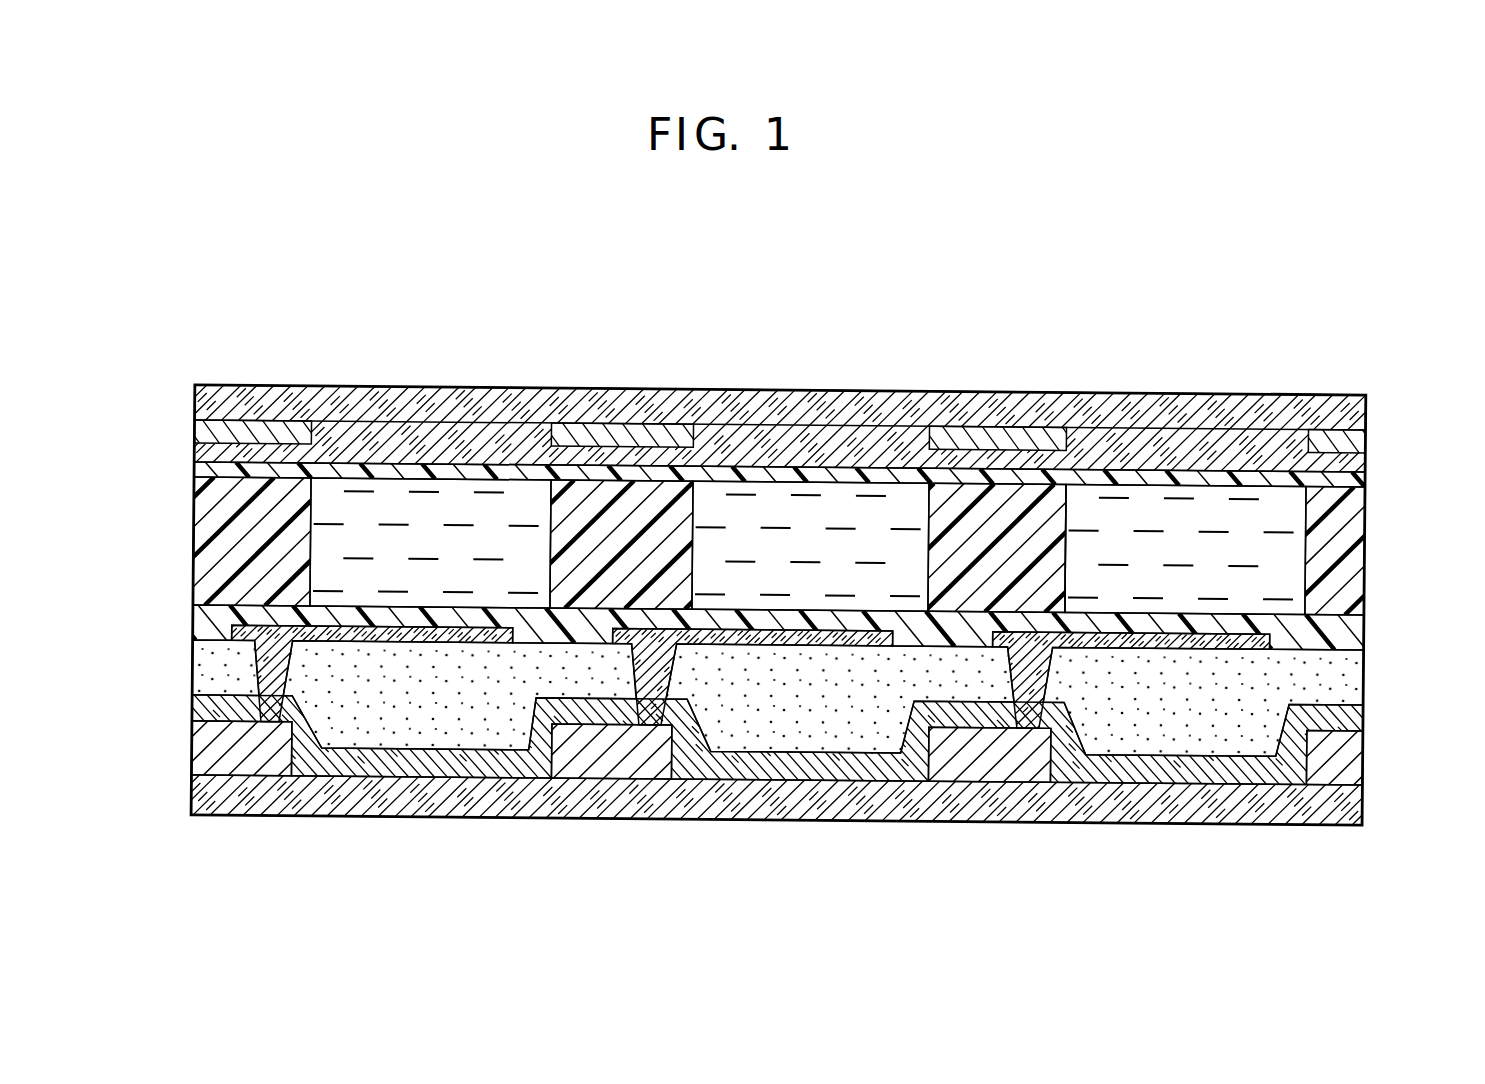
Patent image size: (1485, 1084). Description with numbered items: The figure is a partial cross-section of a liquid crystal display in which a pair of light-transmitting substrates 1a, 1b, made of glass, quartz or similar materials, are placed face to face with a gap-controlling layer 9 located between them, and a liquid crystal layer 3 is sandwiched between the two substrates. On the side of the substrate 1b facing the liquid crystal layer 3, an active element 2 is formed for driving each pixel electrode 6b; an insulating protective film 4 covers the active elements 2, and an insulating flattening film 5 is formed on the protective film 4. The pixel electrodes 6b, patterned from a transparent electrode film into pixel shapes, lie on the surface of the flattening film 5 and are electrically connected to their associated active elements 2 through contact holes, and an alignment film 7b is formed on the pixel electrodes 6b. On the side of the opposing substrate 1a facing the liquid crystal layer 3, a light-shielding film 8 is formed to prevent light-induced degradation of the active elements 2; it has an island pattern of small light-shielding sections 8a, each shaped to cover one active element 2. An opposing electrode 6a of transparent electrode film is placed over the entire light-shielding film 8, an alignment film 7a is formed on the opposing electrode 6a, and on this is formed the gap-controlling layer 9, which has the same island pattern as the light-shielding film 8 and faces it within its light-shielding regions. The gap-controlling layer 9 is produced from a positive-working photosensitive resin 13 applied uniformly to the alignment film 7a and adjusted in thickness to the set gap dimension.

The light-transmitting substrate 1a is at (1373, 400).
The light-transmitting substrate 1b is at (1366, 806).
The active element 2 is at (277, 770).
The liquid crystal layer 3 is at (1228, 490).
The insulating protective film 4 is at (1360, 715).
The insulating flattening film 5 is at (1368, 671).
The opposing electrode 6a is at (1368, 460).
The pixel electrode 6b is at (397, 642).
The alignment film 7a is at (1368, 477).
The alignment film 7b is at (1358, 633).
The light-shielding film 8 is at (562, 425).
The light-shielding section 8a is at (274, 428).
The gap-controlling layer 9 is at (1070, 554).
The positive-working photosensitive resin 13 is at (206, 485).